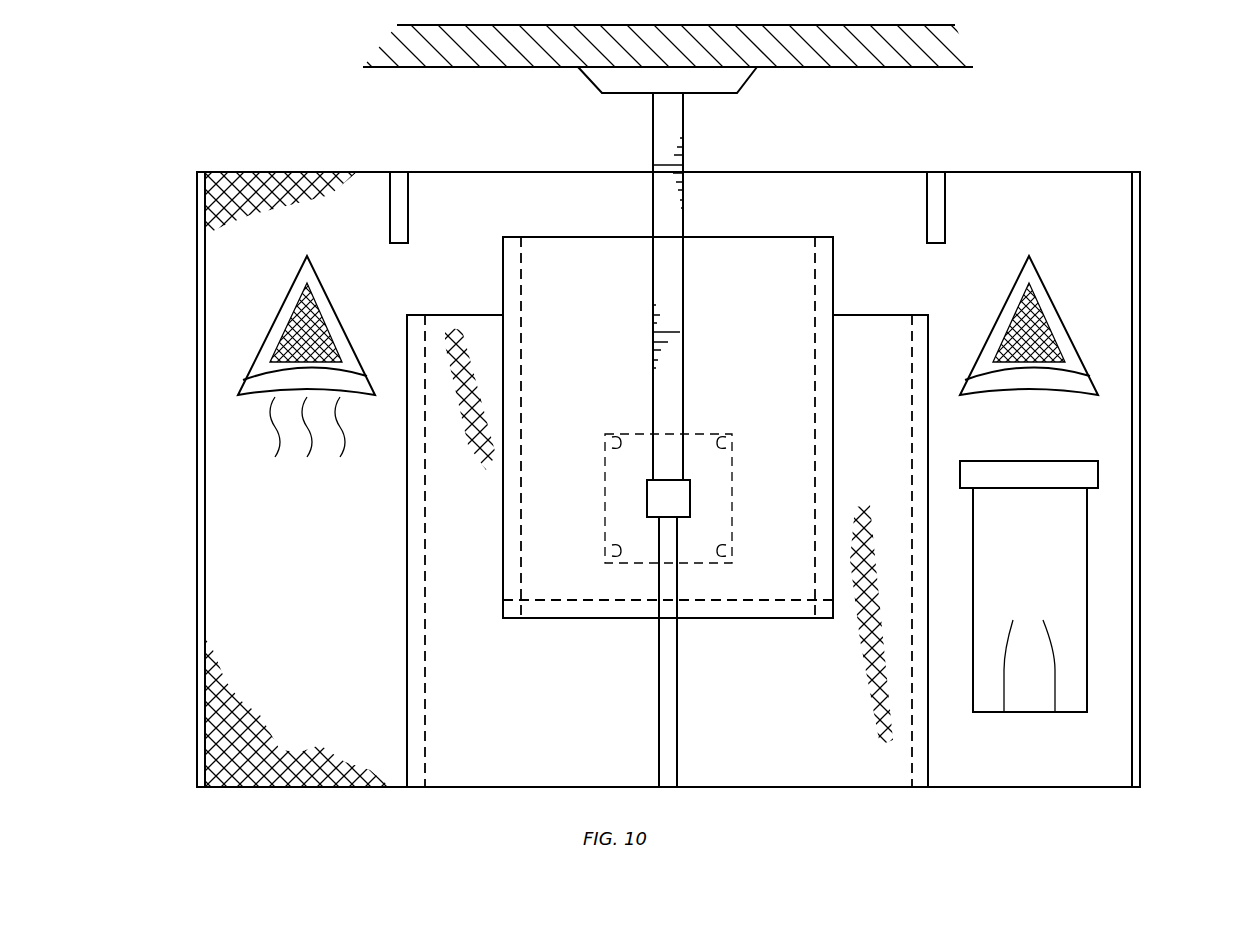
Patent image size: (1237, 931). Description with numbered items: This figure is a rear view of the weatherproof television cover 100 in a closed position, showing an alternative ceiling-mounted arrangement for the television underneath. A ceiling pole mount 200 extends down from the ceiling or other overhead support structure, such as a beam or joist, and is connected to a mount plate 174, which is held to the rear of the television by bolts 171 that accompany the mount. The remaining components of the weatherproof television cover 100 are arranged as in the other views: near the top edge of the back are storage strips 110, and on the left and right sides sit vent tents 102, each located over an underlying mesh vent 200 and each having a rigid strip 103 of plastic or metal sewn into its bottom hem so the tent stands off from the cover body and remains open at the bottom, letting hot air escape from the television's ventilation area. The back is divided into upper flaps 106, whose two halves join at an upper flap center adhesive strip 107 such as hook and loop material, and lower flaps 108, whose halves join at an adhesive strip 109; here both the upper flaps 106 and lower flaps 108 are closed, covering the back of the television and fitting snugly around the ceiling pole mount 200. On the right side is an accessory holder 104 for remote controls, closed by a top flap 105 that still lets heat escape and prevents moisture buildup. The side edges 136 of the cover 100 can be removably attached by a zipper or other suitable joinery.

The weatherproof television cover 100 is at (1008, 172).
The vent tent 102 is at (330, 302).
The rigid strip 103 is at (252, 381).
The accessory holder 104 is at (1047, 591).
The top flap 105 is at (1035, 470).
The upper flaps 106 is at (717, 237).
The upper flap center adhesive strip 107 is at (663, 578).
The lower flaps 108 is at (552, 727).
The adhesive strip 109 is at (661, 690).
The storage strips 110 is at (408, 212).
The side edges 136 is at (197, 254).
The bolts 171 is at (618, 440).
The mount plate 174 is at (732, 490).
The ceiling pole mount 200 is at (663, 305).